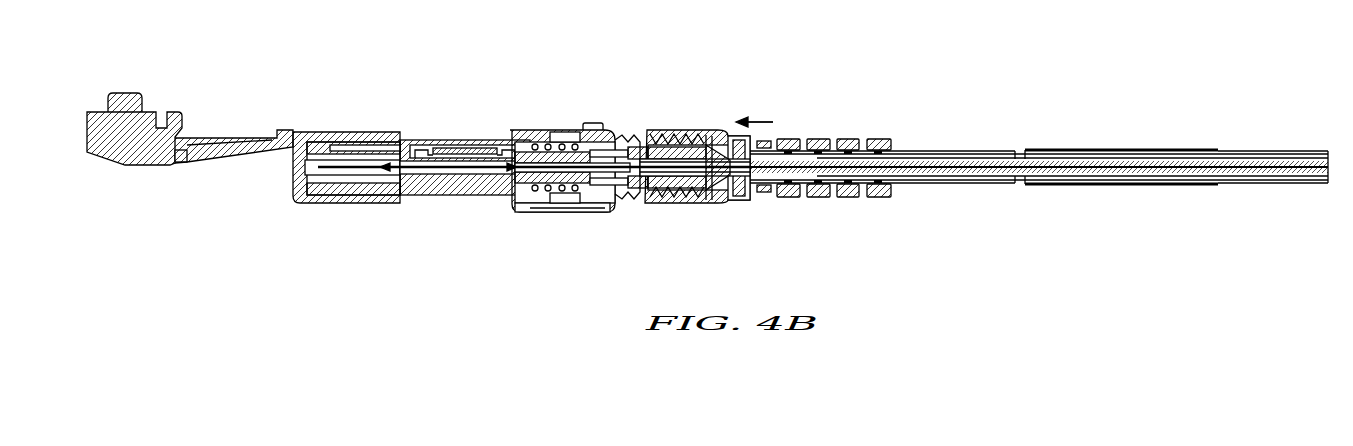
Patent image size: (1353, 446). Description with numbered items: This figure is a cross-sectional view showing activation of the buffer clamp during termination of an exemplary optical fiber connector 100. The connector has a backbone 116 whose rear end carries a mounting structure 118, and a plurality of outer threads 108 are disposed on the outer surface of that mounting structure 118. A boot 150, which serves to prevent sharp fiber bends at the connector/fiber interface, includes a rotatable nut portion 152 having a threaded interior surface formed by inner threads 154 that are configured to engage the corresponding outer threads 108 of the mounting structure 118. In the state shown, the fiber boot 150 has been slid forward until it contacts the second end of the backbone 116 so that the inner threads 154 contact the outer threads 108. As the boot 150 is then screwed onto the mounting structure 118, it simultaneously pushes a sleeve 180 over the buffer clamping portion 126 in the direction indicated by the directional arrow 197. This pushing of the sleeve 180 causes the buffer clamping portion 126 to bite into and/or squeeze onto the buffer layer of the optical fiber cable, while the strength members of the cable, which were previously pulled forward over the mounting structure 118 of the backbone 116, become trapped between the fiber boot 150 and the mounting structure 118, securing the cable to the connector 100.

The optical fiber connector 100 is at (451, 124).
The outer threads 108 is at (632, 140).
The backbone 116 is at (595, 212).
The mounting structure 118 is at (624, 140).
The buffer clamping portion 126 is at (647, 178).
The boot 150 is at (827, 118).
The nut portion 152 is at (700, 205).
The inner threads 154 is at (672, 132).
The sleeve 180 is at (712, 132).
The directional arrow 197 is at (773, 122).